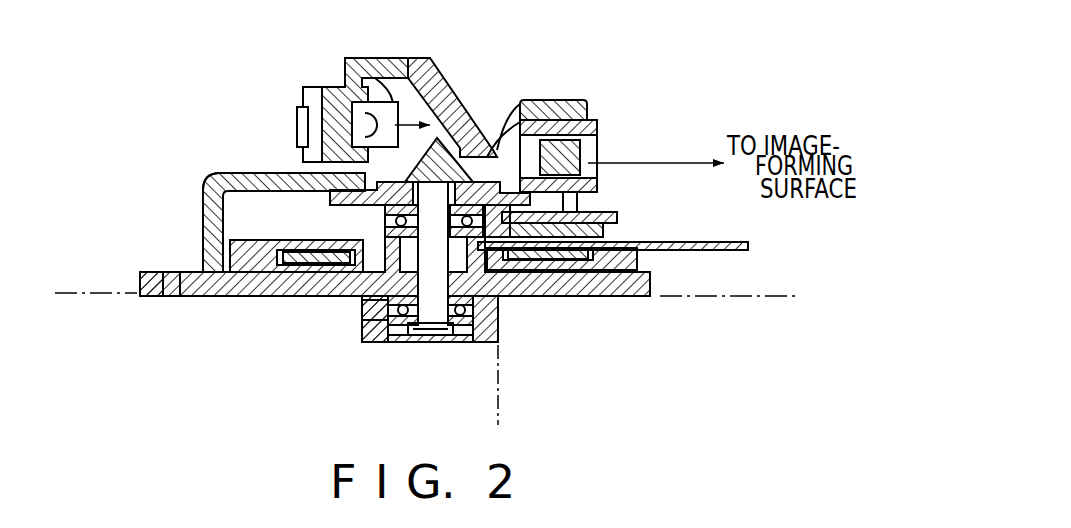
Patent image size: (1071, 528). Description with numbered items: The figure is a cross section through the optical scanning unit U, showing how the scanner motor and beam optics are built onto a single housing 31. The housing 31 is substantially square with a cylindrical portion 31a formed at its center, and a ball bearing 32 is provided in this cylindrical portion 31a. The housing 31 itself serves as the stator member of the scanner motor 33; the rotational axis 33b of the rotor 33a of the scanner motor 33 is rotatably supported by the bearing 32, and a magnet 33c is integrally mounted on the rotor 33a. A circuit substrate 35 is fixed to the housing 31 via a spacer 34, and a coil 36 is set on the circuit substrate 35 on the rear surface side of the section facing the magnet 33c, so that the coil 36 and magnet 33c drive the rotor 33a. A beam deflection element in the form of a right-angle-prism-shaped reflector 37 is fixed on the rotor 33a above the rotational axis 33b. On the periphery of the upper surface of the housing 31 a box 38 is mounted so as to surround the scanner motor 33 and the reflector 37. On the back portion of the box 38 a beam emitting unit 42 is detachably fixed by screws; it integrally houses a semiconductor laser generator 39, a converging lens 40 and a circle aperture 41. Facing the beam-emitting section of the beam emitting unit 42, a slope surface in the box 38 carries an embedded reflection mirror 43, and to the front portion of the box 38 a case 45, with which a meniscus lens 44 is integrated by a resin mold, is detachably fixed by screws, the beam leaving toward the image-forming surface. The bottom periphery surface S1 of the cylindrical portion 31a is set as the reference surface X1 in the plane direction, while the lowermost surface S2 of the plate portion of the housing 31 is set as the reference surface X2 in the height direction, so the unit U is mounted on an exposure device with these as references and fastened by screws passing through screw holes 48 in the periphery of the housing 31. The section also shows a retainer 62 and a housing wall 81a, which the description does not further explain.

The optical scanning unit U is at (588, 58).
The housing 31 is at (645, 297).
The cylindrical portion 31a is at (372, 325).
The ball bearing 32 is at (500, 152).
The scanner motor 33 is at (640, 214).
The rotor 33a is at (605, 215).
The rotational axis 33b is at (437, 325).
The magnet 33c is at (625, 226).
The spacer 34 is at (232, 268).
The circuit substrate 35 is at (748, 246).
The coil 36 is at (290, 270).
The reflector 37 is at (205, 195).
The box 38 is at (217, 175).
The semiconductor laser generator 39 is at (297, 125).
The converging lens 40 is at (347, 110).
The circle aperture 41 is at (405, 82).
The beam emitting unit 42 is at (335, 88).
The reflection mirror 43 is at (468, 125).
The meniscus lens 44 is at (590, 150).
The case 45 is at (596, 130).
The screw holes 48 is at (168, 297).
The bearing retainer 62 is at (486, 300).
The housing wall 81a is at (370, 312).
The bottom periphery surface S1 is at (497, 330).
The lower most surface S2 is at (195, 297).
The reference surface in the plane direction X1 is at (514, 385).
The reference surface in the height direction X2 is at (426, 298).